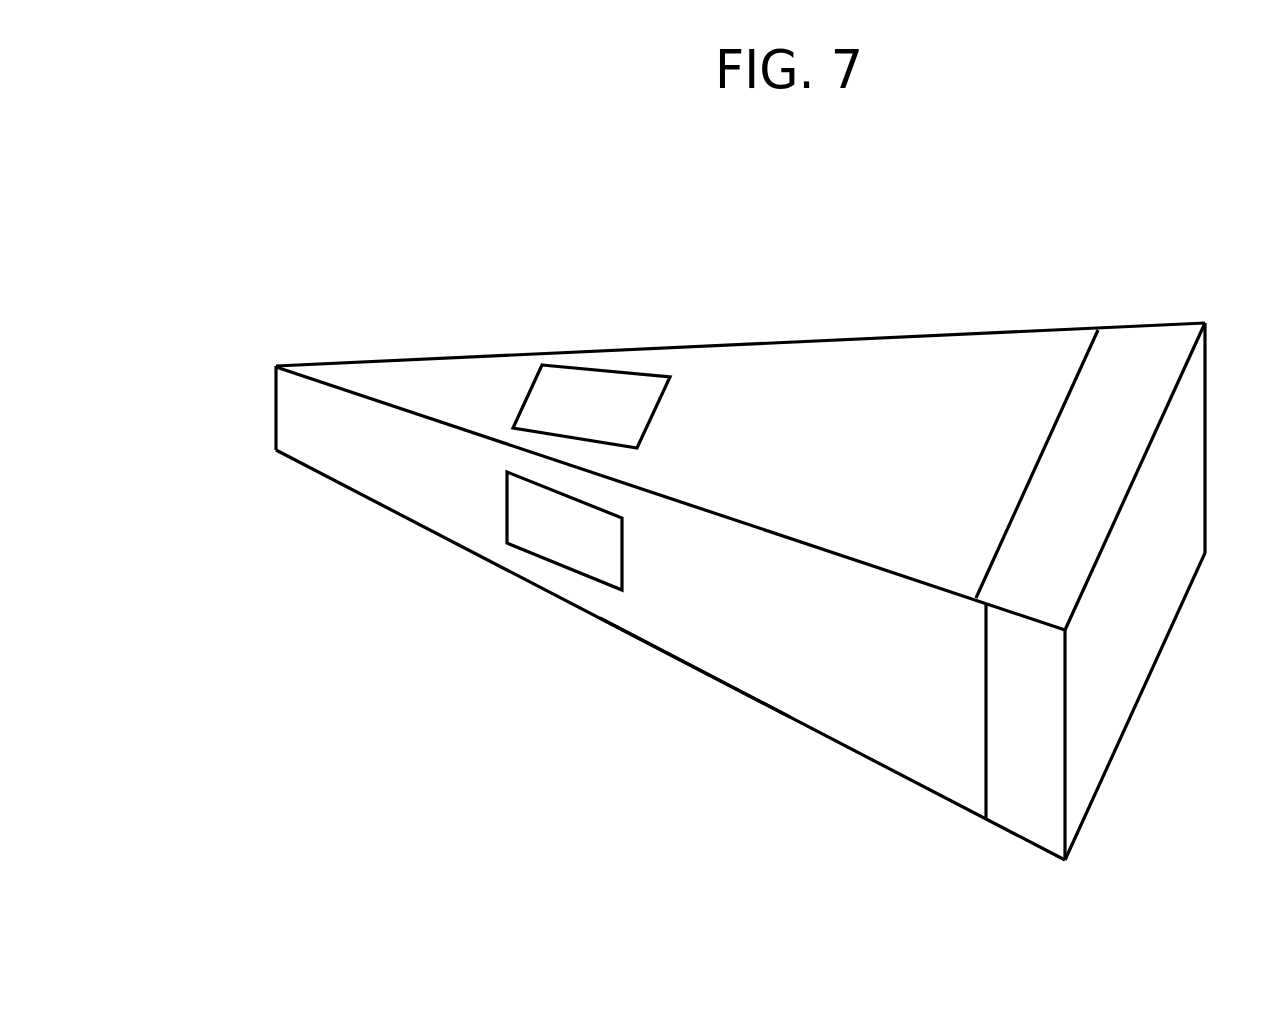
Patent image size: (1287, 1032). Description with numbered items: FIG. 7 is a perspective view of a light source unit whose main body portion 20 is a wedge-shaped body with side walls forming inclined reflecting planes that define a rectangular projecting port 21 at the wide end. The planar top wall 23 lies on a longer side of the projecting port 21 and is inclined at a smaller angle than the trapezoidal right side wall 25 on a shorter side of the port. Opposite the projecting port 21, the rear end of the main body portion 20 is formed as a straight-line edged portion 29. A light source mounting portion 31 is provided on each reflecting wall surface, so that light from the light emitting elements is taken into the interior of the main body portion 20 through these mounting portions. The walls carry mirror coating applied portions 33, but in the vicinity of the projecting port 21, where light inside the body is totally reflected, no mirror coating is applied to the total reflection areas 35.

The main body portion 20 is at (760, 312).
The projecting port 21 is at (1135, 627).
The top wall 23 is at (938, 357).
The right side wall 25 is at (777, 680).
The straight-line edged portion 29 is at (275, 407).
The light source mounting portion 31 is at (570, 385).
The mirror coating applied portion 33 is at (687, 640).
The total reflection area 35 is at (1145, 357).